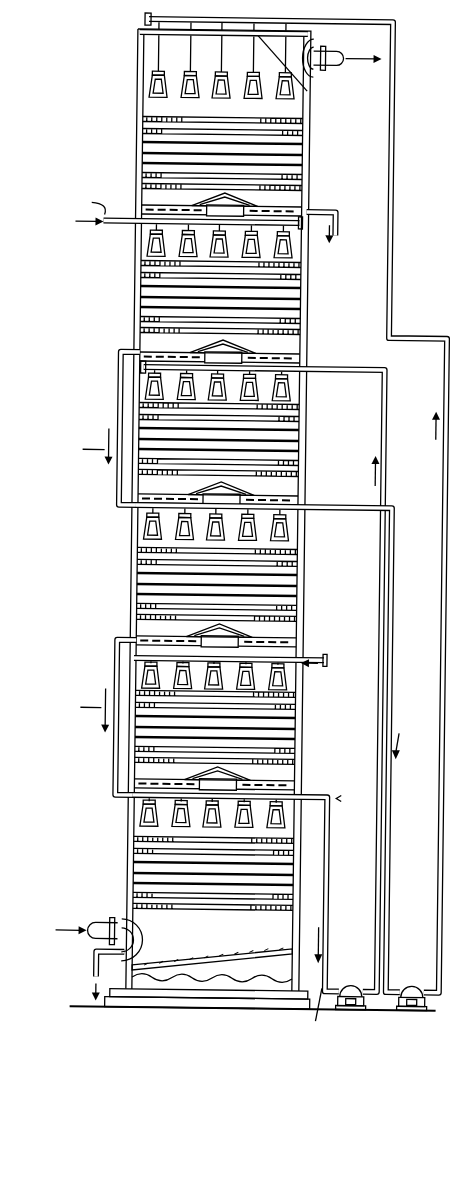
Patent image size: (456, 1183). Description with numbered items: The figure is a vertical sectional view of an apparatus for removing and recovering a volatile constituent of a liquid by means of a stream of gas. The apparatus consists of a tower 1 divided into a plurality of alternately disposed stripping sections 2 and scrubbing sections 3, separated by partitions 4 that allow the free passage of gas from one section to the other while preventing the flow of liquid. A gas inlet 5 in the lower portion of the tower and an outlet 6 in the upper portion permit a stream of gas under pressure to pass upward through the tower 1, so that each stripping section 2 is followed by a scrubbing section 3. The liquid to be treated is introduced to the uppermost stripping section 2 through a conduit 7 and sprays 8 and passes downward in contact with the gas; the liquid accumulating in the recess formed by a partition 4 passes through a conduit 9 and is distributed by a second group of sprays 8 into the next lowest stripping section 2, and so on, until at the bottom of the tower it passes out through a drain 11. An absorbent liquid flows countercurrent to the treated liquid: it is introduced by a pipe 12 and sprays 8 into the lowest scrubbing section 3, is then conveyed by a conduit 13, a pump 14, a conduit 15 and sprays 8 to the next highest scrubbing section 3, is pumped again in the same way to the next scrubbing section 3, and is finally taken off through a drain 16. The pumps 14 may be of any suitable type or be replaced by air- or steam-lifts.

The tower 1 is at (233, 534).
The stripping section 2 is at (133, 300).
The scrubbing section 3 is at (301, 152).
The partition 4 is at (306, 208).
The gas inlet 5 is at (107, 924).
The outlet 6 is at (330, 50).
The conduit 7 is at (115, 226).
The sprays 8 is at (289, 91).
The conduit 9 is at (116, 392).
The drain 11 is at (100, 953).
The pipe 12 is at (333, 660).
The conduit 13 is at (395, 529).
The pump 14 is at (357, 986).
The conduit 15 is at (442, 592).
The drain 16 is at (340, 213).